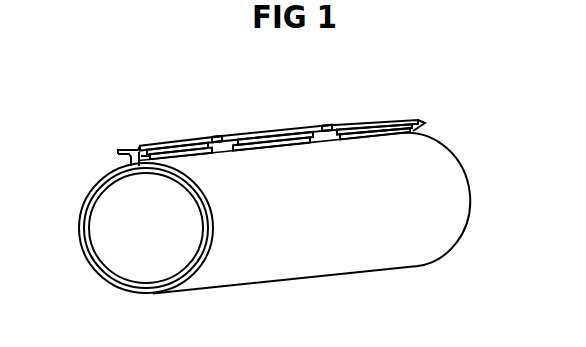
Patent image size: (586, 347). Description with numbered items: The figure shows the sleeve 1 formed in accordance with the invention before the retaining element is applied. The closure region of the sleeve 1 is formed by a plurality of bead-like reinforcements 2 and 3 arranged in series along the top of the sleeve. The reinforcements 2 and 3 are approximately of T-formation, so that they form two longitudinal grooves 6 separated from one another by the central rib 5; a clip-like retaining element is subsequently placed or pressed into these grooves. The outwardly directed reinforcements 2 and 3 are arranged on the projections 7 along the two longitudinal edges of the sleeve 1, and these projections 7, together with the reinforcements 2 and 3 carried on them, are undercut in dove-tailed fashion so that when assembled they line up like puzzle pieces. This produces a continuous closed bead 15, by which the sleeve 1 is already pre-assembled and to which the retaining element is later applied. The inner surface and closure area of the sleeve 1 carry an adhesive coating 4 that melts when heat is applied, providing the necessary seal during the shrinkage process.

The sleeve 1 is at (410, 276).
The bead-like reinforcement 2 is at (166, 141).
The bead-like reinforcement 3 is at (219, 136).
The adhesive coating 4 is at (103, 278).
The central rib 5 is at (139, 150).
The longitudinal groove 6 is at (114, 156).
The projection 7 is at (144, 166).
The continuous closed bead 15 is at (421, 123).